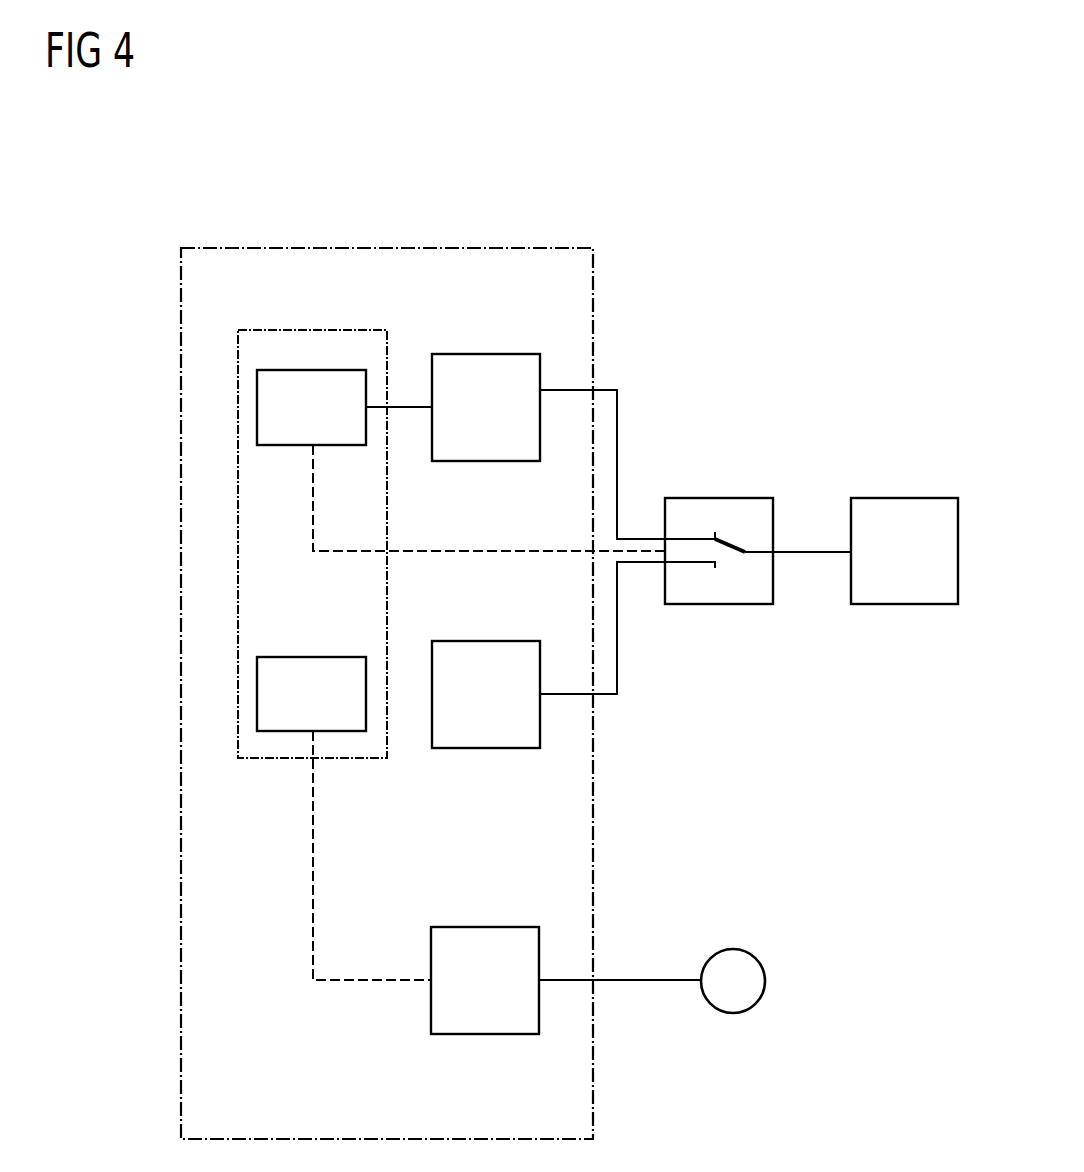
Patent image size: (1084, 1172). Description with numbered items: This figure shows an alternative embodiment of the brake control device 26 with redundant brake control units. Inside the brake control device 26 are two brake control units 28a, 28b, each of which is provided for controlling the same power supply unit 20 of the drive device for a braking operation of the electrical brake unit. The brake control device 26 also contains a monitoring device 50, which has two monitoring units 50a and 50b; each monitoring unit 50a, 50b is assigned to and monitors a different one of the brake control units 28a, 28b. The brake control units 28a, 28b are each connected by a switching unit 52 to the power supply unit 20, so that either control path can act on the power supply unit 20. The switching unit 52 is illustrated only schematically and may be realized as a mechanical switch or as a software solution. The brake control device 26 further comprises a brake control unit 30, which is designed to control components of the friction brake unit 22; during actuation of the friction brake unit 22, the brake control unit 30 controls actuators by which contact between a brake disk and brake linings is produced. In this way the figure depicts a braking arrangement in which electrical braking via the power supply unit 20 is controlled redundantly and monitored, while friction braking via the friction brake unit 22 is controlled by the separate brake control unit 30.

The brake control device 26 is at (415, 248).
The monitoring device 50 is at (246, 770).
The monitoring unit 50a is at (305, 370).
The monitoring unit 50b is at (341, 731).
The brake control unit 28a is at (488, 354).
The brake control unit 28b is at (483, 748).
The brake control unit 30 is at (489, 1034).
The switching unit 52 is at (740, 528).
The power supply unit 20 is at (908, 498).
The friction brake unit 22 is at (765, 981).